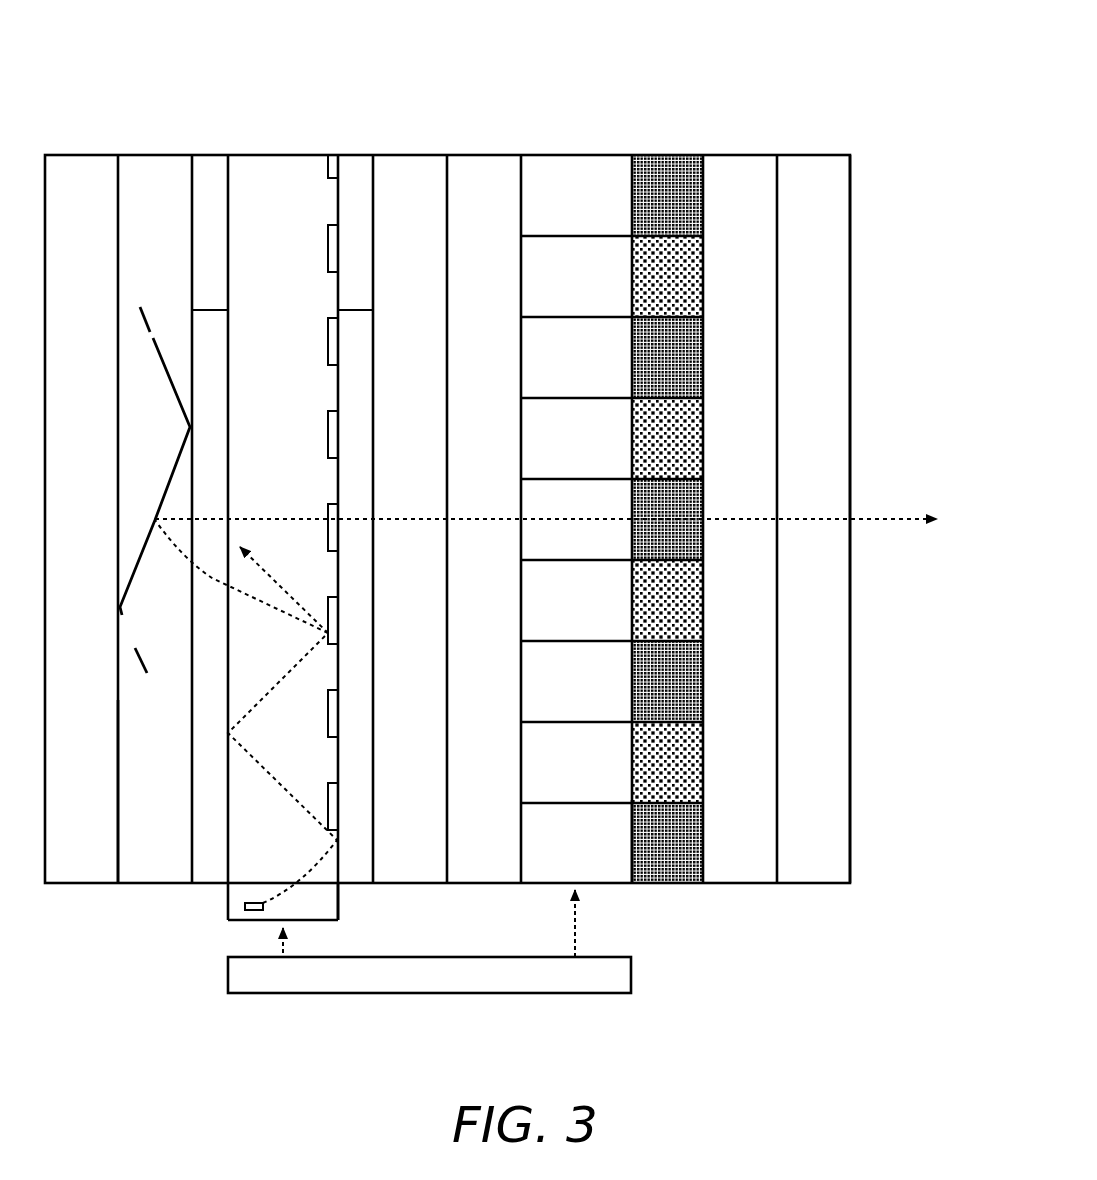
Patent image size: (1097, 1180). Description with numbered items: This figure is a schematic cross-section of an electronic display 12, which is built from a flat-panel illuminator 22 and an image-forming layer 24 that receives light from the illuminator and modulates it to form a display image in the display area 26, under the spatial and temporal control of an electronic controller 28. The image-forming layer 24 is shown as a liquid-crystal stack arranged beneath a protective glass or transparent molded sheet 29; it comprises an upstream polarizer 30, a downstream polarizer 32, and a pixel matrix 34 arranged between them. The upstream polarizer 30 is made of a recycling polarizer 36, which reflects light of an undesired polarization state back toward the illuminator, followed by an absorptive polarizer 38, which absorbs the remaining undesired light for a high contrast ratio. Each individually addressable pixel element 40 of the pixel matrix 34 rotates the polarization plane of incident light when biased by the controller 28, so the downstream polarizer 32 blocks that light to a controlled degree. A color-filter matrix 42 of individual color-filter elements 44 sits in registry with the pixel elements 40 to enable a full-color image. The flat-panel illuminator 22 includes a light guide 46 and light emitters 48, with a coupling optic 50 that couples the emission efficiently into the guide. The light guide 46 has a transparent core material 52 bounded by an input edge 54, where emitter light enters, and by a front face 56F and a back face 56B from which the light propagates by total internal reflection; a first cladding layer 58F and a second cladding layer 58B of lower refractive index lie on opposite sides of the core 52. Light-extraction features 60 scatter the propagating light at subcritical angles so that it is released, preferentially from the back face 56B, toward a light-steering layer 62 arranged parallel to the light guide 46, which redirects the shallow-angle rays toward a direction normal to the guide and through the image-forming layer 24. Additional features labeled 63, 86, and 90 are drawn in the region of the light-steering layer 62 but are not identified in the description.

The electronic display 12 is at (920, 81).
The flat-panel illuminator 22 is at (373, 98).
The image-forming layer 24 is at (850, 98).
The display area 26 is at (858, 883).
The electronic controller 28 is at (416, 988).
The protective glass or transparent molded sheet 29 is at (797, 705).
The upstream polarizer 30 is at (521, 125).
The downstream polarizer 32 is at (725, 705).
The pixel matrix 34 is at (558, 893).
The recycling polarizer 36 is at (396, 705).
The absorptive polarizer 38 is at (470, 705).
The pixel element 40 is at (559, 370).
The color-filter matrix 42 is at (667, 896).
The color-filter elements 44 is at (651, 288).
The light guide 46 is at (373, 125).
The light emitters 48 is at (245, 907).
The coupling optic 50 is at (338, 905).
The transparent core material 52 is at (265, 477).
The input edge 54 is at (248, 883).
The back face 56B is at (228, 189).
The front face 56F is at (338, 284).
The second cladding layer 58B is at (209, 299).
The first cladding layer 58F is at (355, 299).
The light-extraction features 60 is at (328, 343).
The light-steering layer 62 is at (192, 125).
The steerable mirror 63 is at (68, 532).
The mirror cavity 86 is at (143, 254).
The back wall 90 is at (178, 883).